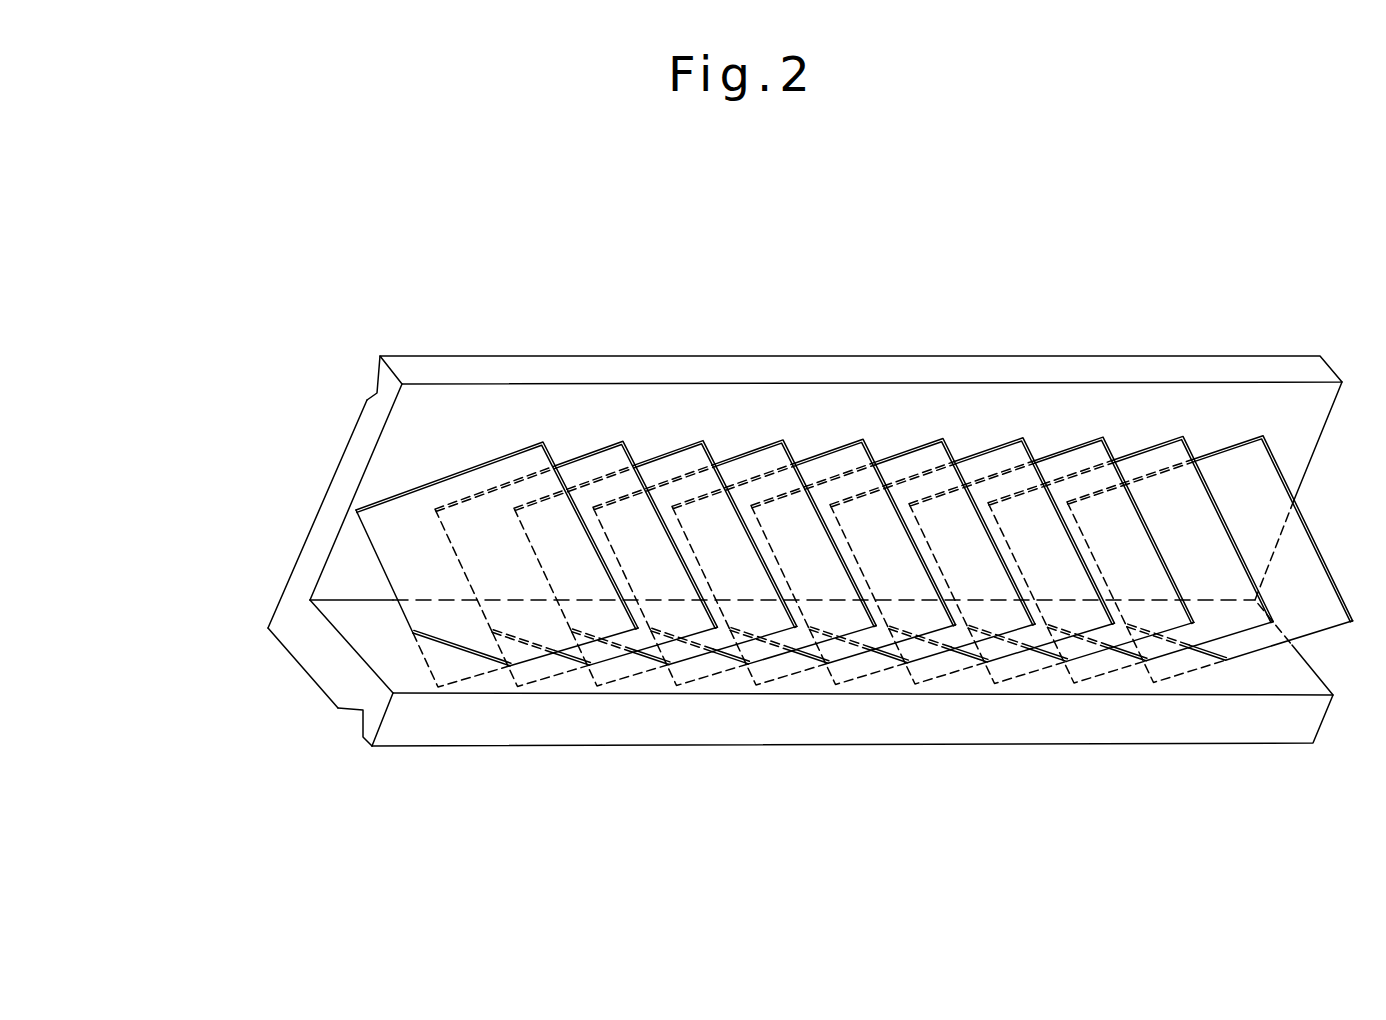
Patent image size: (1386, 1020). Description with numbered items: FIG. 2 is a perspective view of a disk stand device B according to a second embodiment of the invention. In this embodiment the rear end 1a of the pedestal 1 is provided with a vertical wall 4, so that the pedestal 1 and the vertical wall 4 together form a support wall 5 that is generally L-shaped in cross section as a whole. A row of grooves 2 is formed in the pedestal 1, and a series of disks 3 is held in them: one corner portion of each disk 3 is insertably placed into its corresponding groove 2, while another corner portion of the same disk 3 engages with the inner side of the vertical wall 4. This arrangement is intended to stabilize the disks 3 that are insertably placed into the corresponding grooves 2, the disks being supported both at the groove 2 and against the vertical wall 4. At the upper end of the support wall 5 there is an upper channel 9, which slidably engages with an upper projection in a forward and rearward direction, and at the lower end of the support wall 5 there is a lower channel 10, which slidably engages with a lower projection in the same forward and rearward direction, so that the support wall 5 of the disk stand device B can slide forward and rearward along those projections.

The disk stand device B is at (918, 322).
The pedestal 1 is at (326, 682).
The rear end 1a is at (333, 596).
The groove 2 is at (572, 660).
The disk 3 is at (528, 448).
The vertical wall 4 is at (337, 500).
The support wall 5 is at (236, 621).
The upper channel 9 is at (376, 393).
The lower channel 10 is at (362, 728).